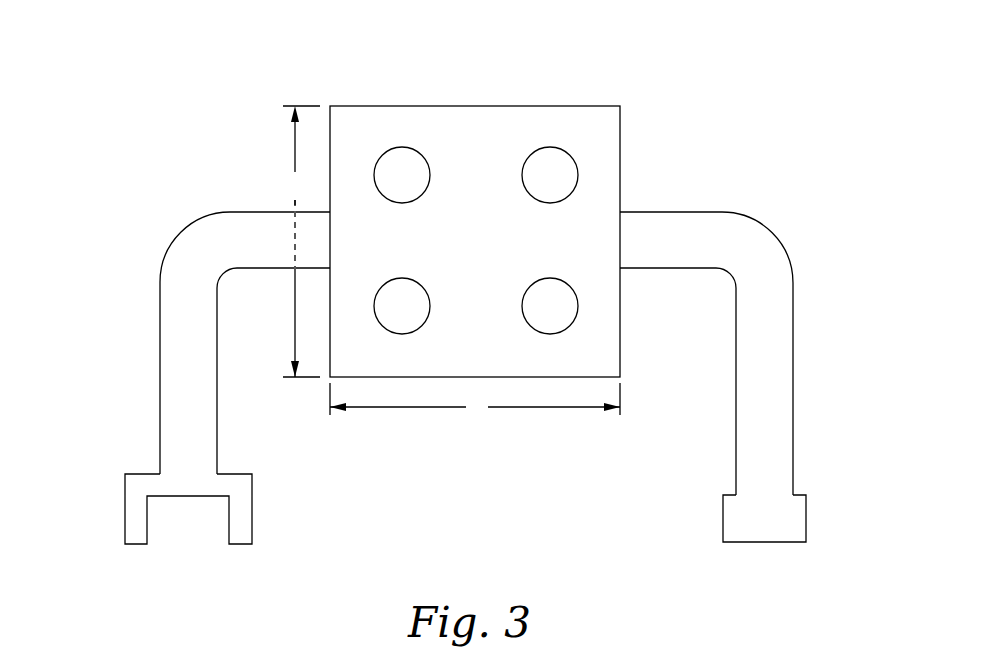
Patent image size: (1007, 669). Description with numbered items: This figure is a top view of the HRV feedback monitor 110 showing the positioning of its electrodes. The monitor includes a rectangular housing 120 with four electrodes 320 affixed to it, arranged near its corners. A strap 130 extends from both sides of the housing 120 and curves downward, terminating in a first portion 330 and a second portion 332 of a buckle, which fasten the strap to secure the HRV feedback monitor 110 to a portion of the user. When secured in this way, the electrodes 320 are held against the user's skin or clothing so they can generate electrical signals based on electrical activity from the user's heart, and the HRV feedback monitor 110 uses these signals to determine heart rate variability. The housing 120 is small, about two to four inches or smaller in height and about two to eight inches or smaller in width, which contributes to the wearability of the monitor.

The HRV feedback monitor 110 is at (664, 72).
The housing 120 is at (475, 241).
The electrodes 320 is at (476, 240).
The strap 130 is at (793, 368).
The first portion of a buckle 330 is at (806, 518).
The second portion of a buckle 332 is at (125, 510).